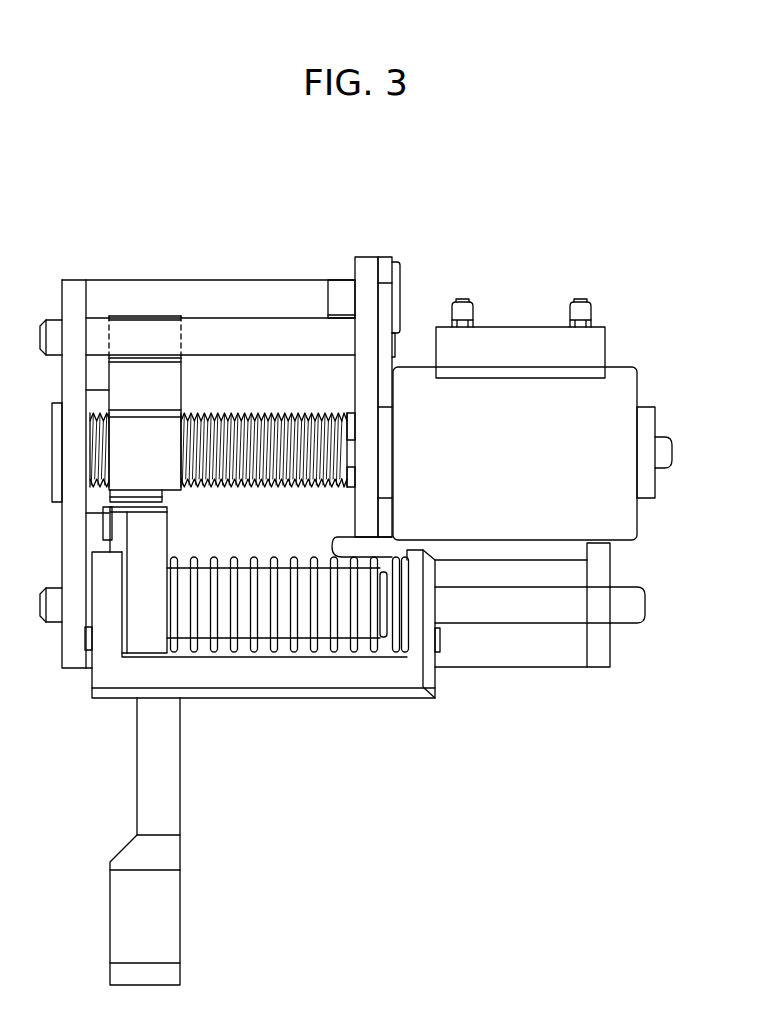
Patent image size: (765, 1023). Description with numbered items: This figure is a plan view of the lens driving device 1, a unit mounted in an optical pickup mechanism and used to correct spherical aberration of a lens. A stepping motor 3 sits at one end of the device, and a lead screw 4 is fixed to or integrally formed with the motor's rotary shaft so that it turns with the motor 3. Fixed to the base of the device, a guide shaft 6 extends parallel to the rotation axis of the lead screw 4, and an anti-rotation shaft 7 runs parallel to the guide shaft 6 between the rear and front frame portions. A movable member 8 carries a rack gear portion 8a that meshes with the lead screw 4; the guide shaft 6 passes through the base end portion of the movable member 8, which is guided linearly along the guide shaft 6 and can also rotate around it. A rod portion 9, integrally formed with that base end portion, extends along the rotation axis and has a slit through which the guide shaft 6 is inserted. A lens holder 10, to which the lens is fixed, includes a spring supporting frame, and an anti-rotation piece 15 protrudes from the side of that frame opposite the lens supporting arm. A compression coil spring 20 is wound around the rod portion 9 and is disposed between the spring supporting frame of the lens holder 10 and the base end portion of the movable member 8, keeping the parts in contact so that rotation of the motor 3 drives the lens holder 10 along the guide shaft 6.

The lens driving device 1 is at (214, 218).
The stepping motor 3 is at (615, 392).
The lead screw 4 is at (238, 413).
The guide shaft 6 is at (517, 615).
The anti-rotation shaft 7 is at (243, 327).
The movable member 8 is at (148, 535).
The rack gear portion 8a is at (152, 432).
The rod portion 9 is at (242, 625).
The lens holder 10 is at (320, 698).
The anti-rotation piece 15 is at (148, 316).
The compression coil spring 20 is at (255, 557).